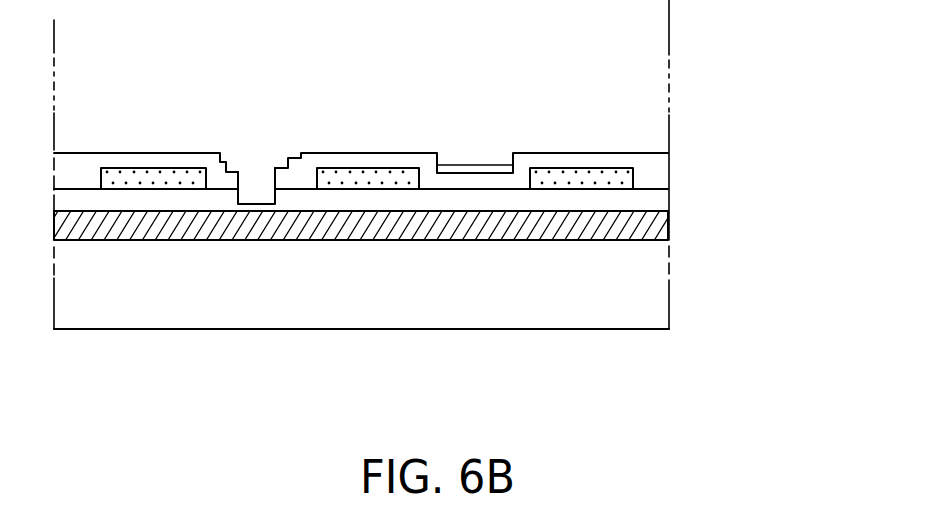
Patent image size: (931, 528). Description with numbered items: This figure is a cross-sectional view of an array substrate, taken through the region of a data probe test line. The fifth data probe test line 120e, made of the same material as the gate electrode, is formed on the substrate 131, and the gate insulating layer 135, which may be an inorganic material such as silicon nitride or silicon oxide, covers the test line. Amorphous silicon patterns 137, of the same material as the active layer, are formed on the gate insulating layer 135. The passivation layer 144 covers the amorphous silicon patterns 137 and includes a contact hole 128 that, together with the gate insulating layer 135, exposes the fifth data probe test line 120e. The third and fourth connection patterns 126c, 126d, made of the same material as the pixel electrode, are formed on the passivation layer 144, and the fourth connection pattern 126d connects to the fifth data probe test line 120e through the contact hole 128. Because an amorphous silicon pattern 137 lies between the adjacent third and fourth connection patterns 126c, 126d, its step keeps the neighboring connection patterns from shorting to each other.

The substrate 131 is at (632, 288).
The fifth data probe test line 120e is at (670, 225).
The gate insulating layer 135 is at (653, 198).
The passivation layer 144 is at (657, 170).
The contact hole 128 is at (248, 135).
The third connection pattern 126c is at (464, 165).
The fourth connection pattern 126d is at (274, 166).
The amorphous silicon pattern 137 is at (146, 176).